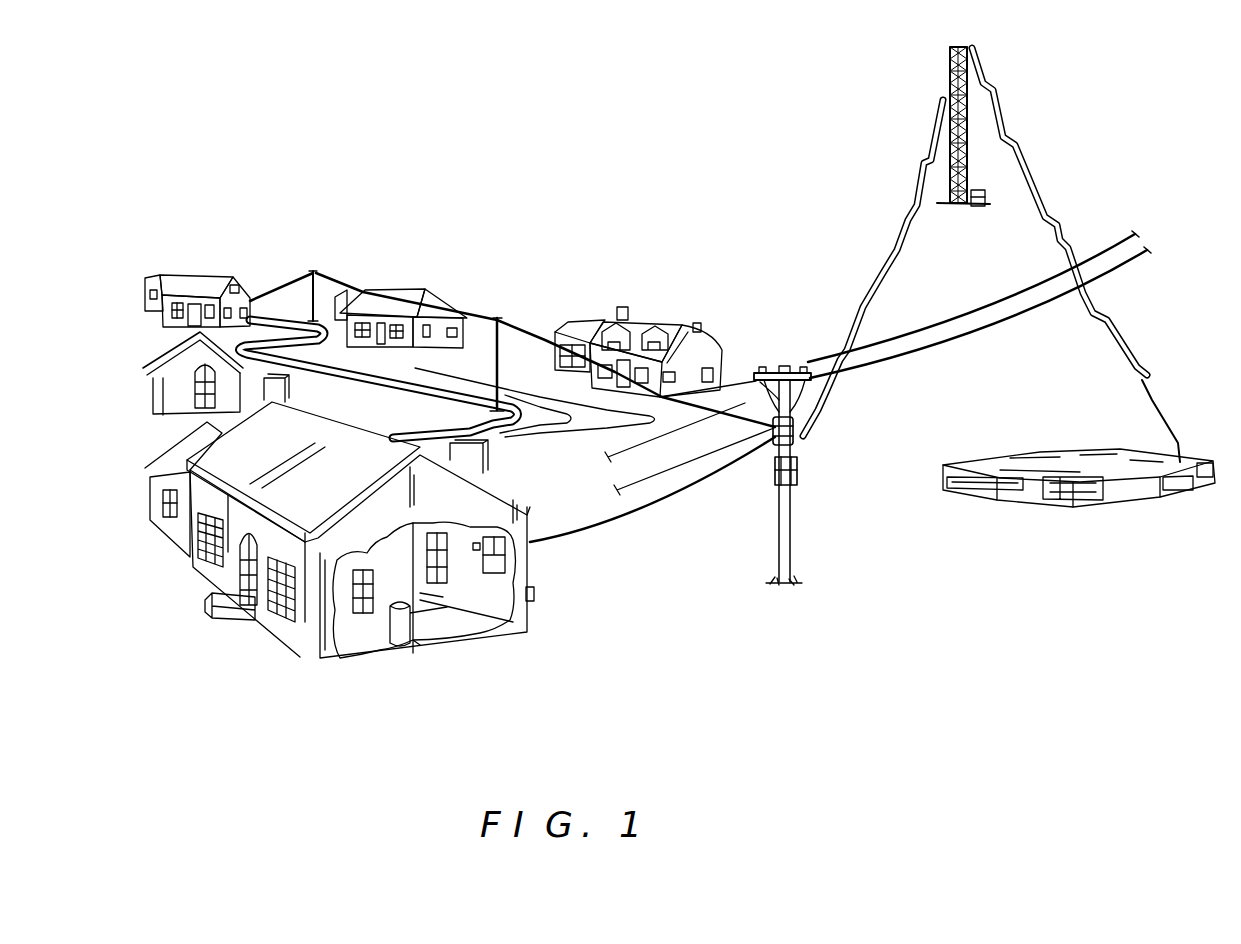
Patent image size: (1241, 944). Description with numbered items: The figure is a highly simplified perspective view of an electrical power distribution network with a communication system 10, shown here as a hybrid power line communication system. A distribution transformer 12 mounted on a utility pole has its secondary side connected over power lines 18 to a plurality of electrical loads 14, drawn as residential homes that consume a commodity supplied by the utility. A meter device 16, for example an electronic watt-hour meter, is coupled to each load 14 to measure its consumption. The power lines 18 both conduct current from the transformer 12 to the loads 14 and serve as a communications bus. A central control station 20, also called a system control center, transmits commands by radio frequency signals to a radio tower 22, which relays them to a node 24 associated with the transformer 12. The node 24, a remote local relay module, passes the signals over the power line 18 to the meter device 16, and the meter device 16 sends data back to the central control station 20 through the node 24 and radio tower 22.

The communication system 10 is at (1098, 150).
The distribution transformer 12 is at (771, 431).
The electrical load 14 is at (210, 277).
The meter device 16 is at (697, 325).
The power line 18 is at (522, 328).
The central control station 20 is at (1040, 458).
The radio tower 22 is at (967, 173).
The node 24 is at (799, 471).